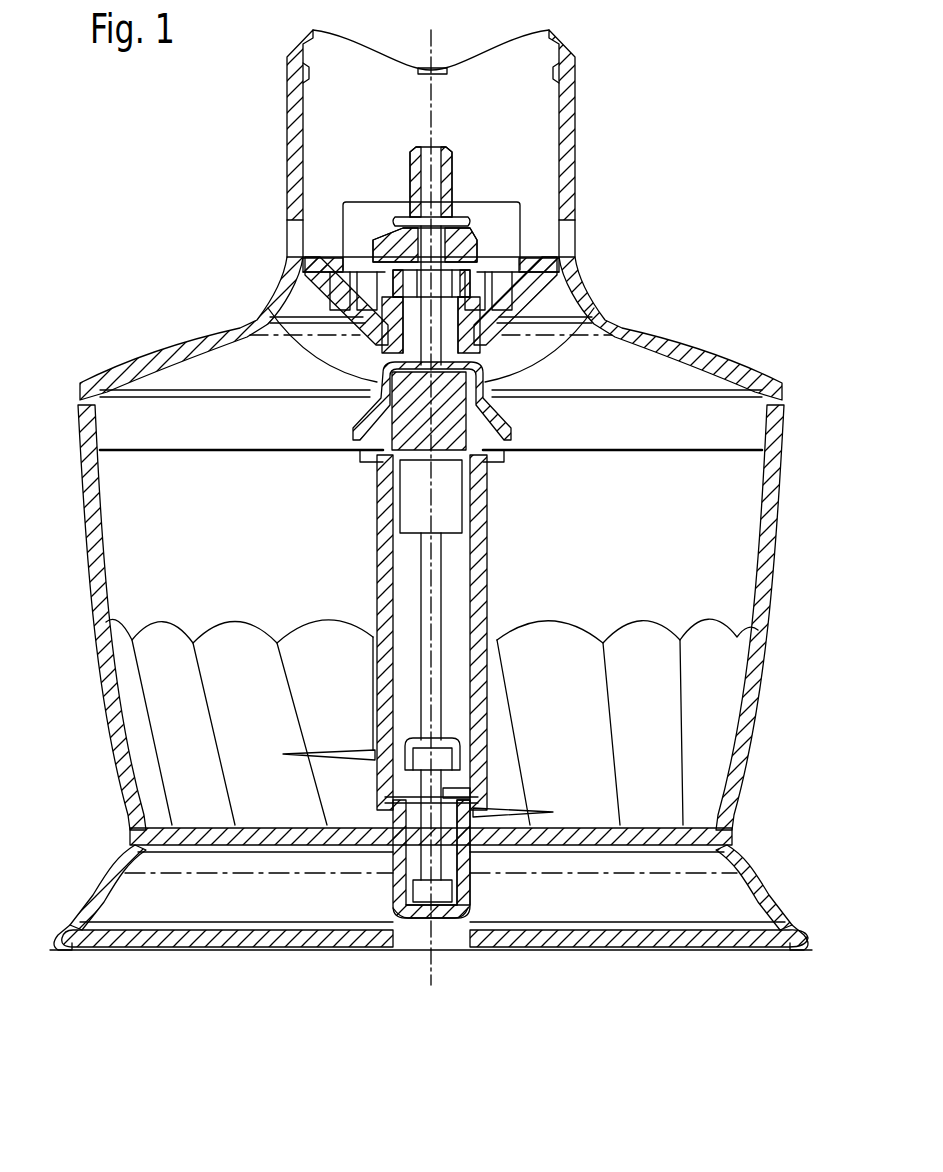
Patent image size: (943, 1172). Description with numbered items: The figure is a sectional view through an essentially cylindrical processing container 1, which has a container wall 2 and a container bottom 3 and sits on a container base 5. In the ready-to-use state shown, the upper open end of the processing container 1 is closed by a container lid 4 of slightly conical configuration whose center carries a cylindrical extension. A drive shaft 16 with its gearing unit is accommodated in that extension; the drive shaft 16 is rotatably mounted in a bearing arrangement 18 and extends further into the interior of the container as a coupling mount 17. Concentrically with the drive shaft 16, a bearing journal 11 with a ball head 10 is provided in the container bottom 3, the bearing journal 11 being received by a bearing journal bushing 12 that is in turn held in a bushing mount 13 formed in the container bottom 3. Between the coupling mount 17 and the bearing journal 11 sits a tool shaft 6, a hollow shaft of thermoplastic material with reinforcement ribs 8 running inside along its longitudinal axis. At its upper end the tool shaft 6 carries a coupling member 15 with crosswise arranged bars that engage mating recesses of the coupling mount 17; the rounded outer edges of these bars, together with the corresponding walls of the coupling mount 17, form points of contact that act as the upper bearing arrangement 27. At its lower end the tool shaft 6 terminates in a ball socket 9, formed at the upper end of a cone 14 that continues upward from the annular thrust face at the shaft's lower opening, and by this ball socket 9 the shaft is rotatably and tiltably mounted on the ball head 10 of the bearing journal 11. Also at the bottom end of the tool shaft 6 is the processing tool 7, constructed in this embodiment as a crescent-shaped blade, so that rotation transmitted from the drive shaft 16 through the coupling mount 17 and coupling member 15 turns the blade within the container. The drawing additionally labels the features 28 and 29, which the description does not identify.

The processing container 1 is at (419, 529).
The container wall 2 is at (92, 517).
The container bottom 3 is at (650, 848).
The container lid 4 is at (726, 358).
The container base 5 is at (95, 942).
The tool shaft 6 is at (489, 507).
The processing tool 7 is at (292, 758).
The reinforcement ribs 8 is at (410, 572).
The ball socket 9 is at (447, 740).
The ball head 10 is at (418, 740).
The bearing journal 11 is at (402, 918).
The bearing journal bushing 12 is at (468, 850).
The bushing mount 13 is at (458, 917).
The cone 14 is at (394, 916).
The coupling member 15 is at (275, 325).
The drive shaft 16 is at (472, 232).
The coupling mount 17 is at (578, 327).
The bearing arrangement 18 is at (522, 330).
The upper bearing arrangement 27 is at (349, 460).
The base plate 28 is at (487, 860).
The rib 29 is at (480, 790).